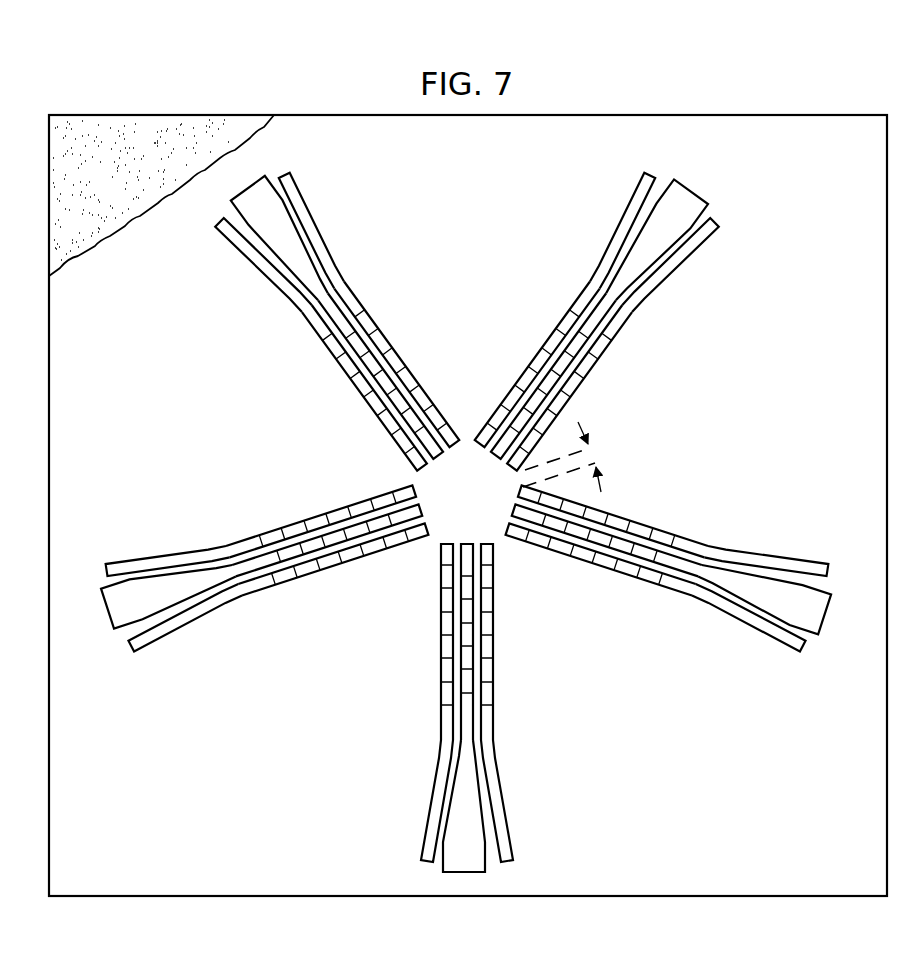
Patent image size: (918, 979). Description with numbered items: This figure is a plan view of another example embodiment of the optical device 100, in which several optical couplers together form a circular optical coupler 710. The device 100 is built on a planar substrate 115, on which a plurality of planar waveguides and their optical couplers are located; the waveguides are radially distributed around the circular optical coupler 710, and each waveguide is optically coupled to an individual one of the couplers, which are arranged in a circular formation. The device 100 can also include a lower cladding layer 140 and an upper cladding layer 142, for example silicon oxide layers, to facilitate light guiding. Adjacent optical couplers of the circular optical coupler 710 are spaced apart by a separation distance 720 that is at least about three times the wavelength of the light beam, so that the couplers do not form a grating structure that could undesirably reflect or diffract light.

The optical device 100 is at (784, 68).
The planar substrate 115 is at (694, 897).
The lower cladding layer 140 is at (690, 123).
The upper cladding layer 142 is at (120, 124).
The circular optical coupler 710 is at (519, 233).
The separation distance 720 is at (601, 492).